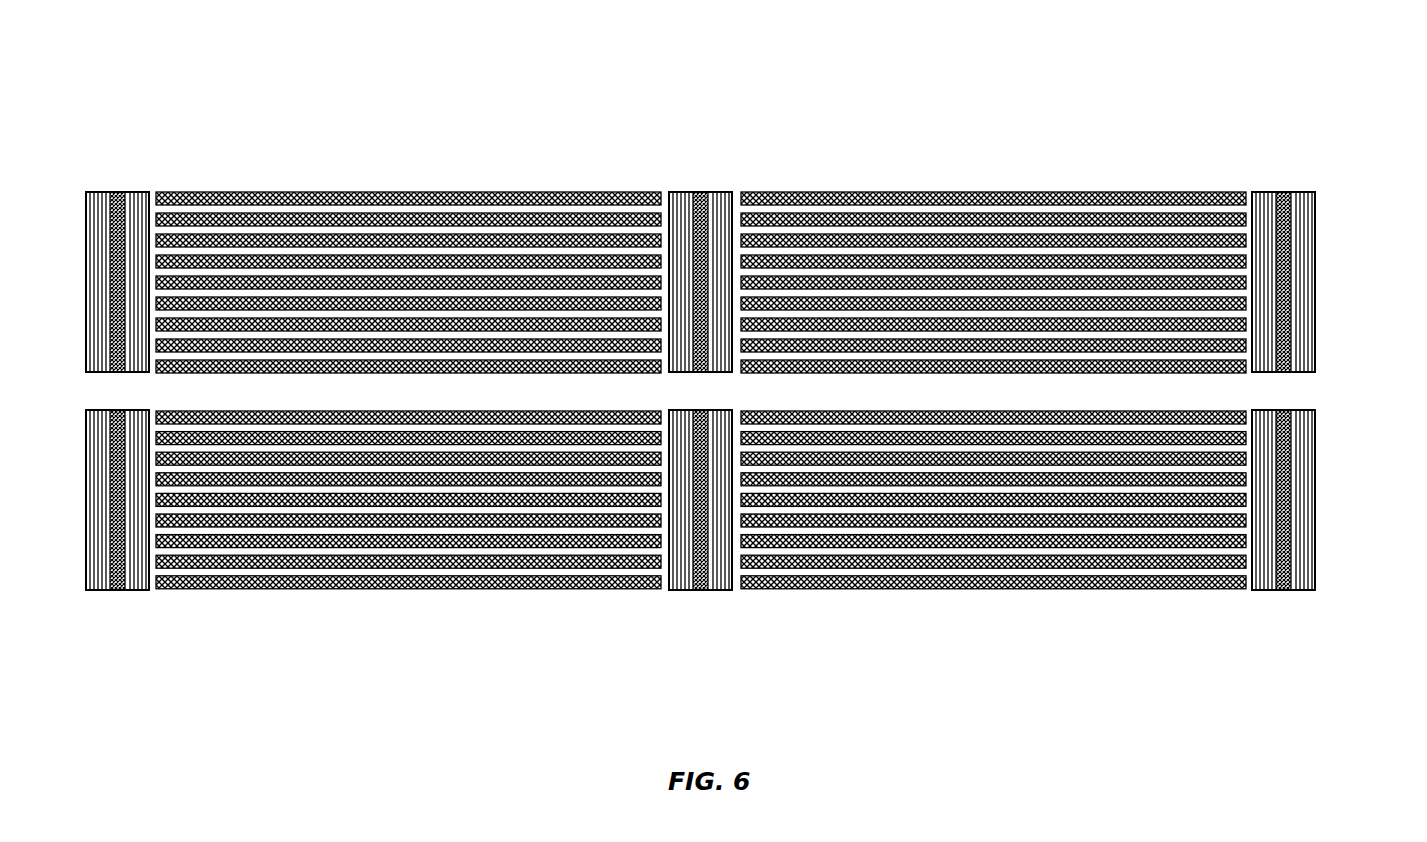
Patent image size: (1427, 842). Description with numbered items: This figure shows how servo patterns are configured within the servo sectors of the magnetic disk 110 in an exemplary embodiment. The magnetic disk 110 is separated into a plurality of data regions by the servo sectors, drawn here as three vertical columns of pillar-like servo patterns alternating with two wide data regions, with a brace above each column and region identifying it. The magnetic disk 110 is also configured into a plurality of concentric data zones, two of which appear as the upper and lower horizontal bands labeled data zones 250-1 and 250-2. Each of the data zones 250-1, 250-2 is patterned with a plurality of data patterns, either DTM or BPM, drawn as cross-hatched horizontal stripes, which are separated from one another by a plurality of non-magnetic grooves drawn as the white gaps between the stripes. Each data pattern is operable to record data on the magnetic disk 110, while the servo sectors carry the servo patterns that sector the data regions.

The magnetic disk 110 is at (315, 68).
The data zone 250-1 is at (1330, 192).
The data zone 250-2 is at (1330, 410).